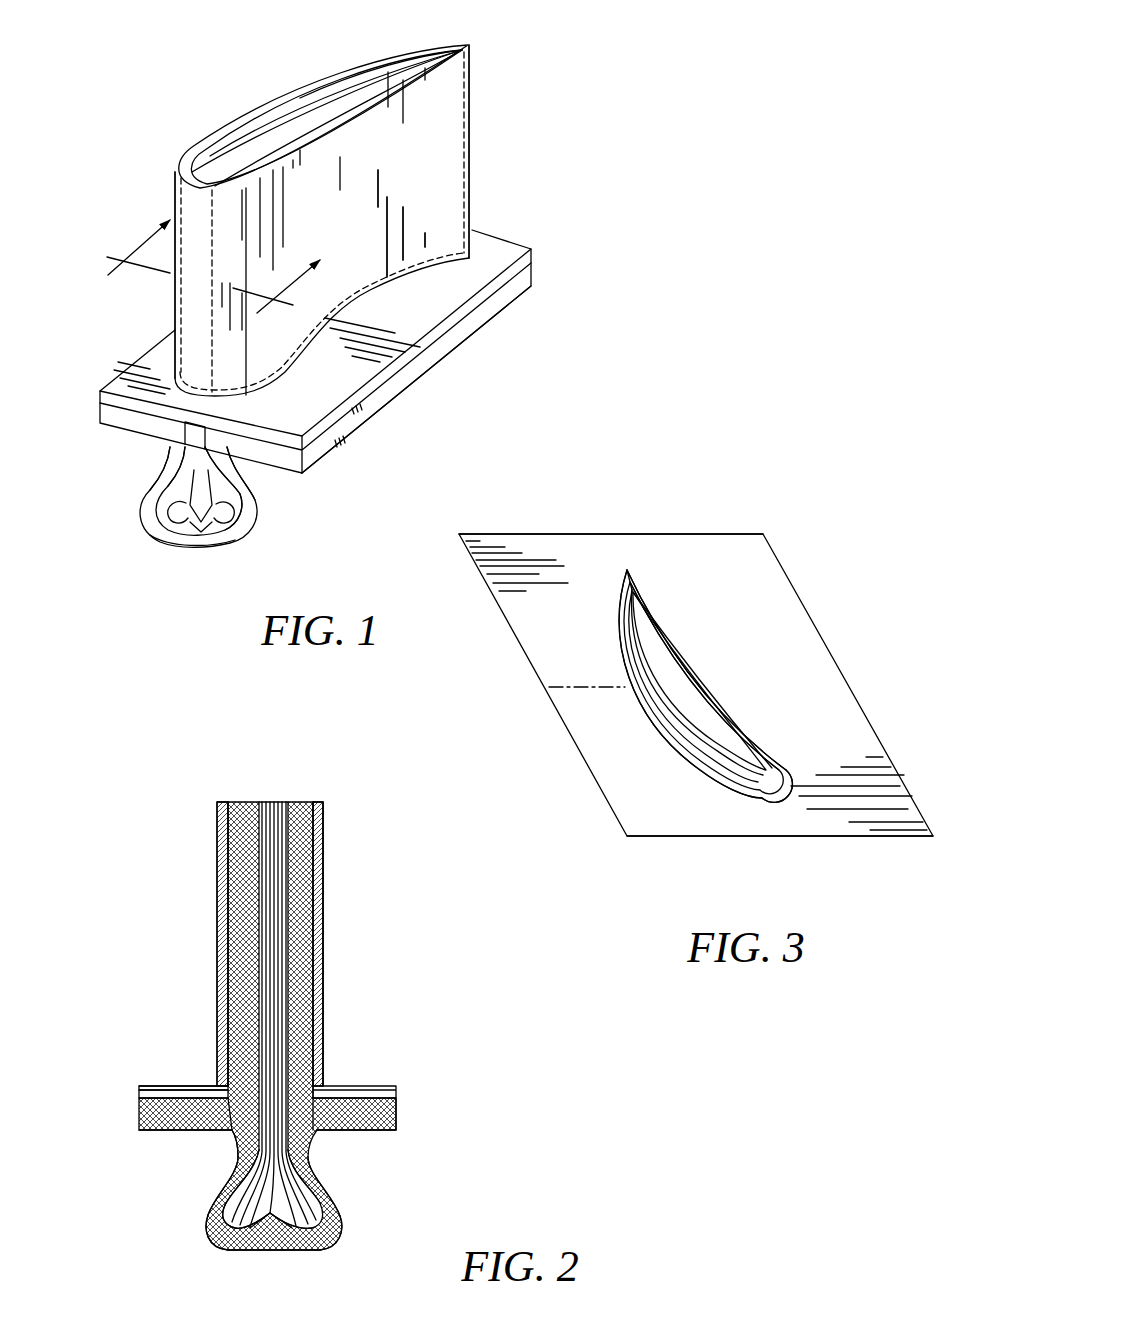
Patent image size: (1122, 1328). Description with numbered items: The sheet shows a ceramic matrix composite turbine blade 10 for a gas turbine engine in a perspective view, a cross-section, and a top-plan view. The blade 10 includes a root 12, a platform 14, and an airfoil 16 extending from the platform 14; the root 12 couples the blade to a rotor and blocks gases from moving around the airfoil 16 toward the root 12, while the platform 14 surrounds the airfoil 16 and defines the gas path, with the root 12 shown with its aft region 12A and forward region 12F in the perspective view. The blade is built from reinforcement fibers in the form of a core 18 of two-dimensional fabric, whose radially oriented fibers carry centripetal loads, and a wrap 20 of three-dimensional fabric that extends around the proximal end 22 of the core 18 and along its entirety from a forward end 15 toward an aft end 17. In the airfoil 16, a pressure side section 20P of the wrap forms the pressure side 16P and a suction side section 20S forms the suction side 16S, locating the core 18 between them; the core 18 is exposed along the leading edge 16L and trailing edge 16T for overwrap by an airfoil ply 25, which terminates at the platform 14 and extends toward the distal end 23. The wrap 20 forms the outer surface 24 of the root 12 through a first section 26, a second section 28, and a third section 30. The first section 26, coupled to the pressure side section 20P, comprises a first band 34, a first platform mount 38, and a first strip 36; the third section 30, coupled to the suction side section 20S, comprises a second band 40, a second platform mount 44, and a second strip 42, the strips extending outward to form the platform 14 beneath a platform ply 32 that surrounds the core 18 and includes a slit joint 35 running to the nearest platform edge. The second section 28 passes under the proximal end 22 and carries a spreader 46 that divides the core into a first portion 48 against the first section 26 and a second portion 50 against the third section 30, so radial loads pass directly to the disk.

In FIG. 1, the ceramic matrix composite turbine blade 10 is at (128, 70).
In FIG. 3, the ceramic matrix composite turbine blade 10 is at (728, 511).
In FIG. 2, the ceramic matrix composite turbine blade 10 is at (360, 772).
In FIG. 1, the root 12 is at (142, 508).
In FIG. 2, the root 12 is at (341, 1222).
In FIG. 1, the root aft portion 12A is at (479, 328).
In FIG. 1, the root forward portion 12F is at (222, 455).
In FIG. 1, the platform 14 is at (94, 390).
In FIG. 3, the platform 14 is at (856, 769).
In FIG. 2, the platform 14 is at (121, 1095).
In FIG. 1, the forward end 15 is at (82, 508).
In FIG. 3, the forward end 15 is at (765, 847).
In FIG. 1, the airfoil 16 is at (167, 213).
In FIG. 3, the airfoil 16 is at (705, 686).
In FIG. 2, the airfoil 16 is at (202, 861).
In FIG. 1, the suction side 16S is at (173, 163).
In FIG. 3, the suction side 16S is at (623, 692).
In FIG. 1, the pressure side 16P is at (417, 180).
In FIG. 3, the pressure side 16P is at (696, 683).
In FIG. 1, the trailing edge 16T is at (483, 53).
In FIG. 3, the trailing edge 16T is at (627, 557).
In FIG. 3, the leading edge 16L is at (788, 786).
In FIG. 1, the aft end 17 is at (503, 227).
In FIG. 3, the aft end 17 is at (665, 530).
In FIG. 1, the core 18 is at (260, 133).
In FIG. 3, the core 18 is at (707, 729).
In FIG. 2, the core 18 is at (271, 793).
In FIG. 1, the wrap 20 is at (213, 127).
In FIG. 3, the wrap 20 is at (774, 733).
In FIG. 2, the wrap 20 is at (302, 798).
In FIG. 1, the suction side section 20S is at (280, 83).
In FIG. 3, the suction side section 20S is at (614, 635).
In FIG. 2, the suction side section 20S is at (221, 916).
In FIG. 1, the pressure side section 20P is at (337, 113).
In FIG. 3, the pressure side section 20P is at (663, 650).
In FIG. 2, the pressure side section 20P is at (327, 872).
In FIG. 1, the proximal end 22 is at (196, 514).
In FIG. 2, the proximal end 22 is at (266, 1190).
In FIG. 1, the distal end 23 is at (307, 73).
In FIG. 2, the distal end 23 is at (238, 793).
In FIG. 1, the outer surface 24 is at (203, 522).
In FIG. 2, the outer surface 24 is at (257, 1251).
In FIG. 1, the airfoil ply 25 is at (340, 160).
In FIG. 3, the airfoil ply 25 is at (642, 616).
In FIG. 2, the airfoil ply 25 is at (331, 971).
In FIG. 1, the first section 26 is at (243, 473).
In FIG. 2, the first section 26 is at (327, 1172).
In FIG. 1, the second section 28 is at (163, 533).
In FIG. 2, the second section 28 is at (281, 1250).
In FIG. 1, the third section 30 is at (170, 457).
In FIG. 2, the third section 30 is at (219, 1172).
In FIG. 1, the platform ply 32 is at (159, 354).
In FIG. 3, the platform ply 32 is at (524, 557).
In FIG. 2, the platform ply 32 is at (212, 1078).
In FIG. 2, the first band 34 is at (339, 1198).
In FIG. 3, the slit joint 35 is at (589, 679).
In FIG. 2, the first strip 36 is at (379, 1112).
In FIG. 2, the first platform mount 38 is at (317, 1117).
In FIG. 2, the second band 40 is at (212, 1189).
In FIG. 2, the second strip 42 is at (159, 1110).
In FIG. 2, the second platform mount 44 is at (231, 1136).
In FIG. 1, the spreader 46 is at (222, 518).
In FIG. 2, the spreader 46 is at (268, 1215).
In FIG. 1, the first portion 48 is at (234, 497).
In FIG. 2, the first portion 48 is at (306, 1216).
In FIG. 1, the second portion 50 is at (181, 505).
In FIG. 2, the second portion 50 is at (233, 1217).